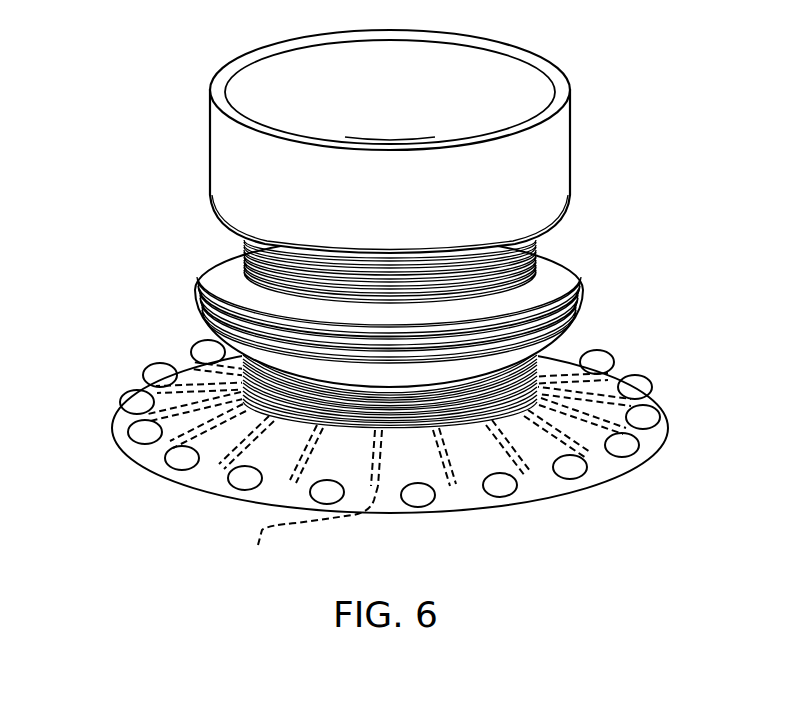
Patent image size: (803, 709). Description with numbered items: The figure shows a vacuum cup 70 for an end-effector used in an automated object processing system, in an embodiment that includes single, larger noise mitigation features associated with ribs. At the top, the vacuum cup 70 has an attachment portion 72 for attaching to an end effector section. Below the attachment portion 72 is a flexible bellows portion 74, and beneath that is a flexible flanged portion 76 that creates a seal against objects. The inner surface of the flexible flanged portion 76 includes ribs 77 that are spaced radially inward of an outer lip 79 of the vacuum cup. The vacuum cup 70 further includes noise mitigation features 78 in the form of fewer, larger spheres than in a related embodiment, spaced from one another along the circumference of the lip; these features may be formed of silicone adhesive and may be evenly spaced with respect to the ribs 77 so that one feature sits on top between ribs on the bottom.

The vacuum cup 70 is at (100, 80).
The attachment portion 72 is at (570, 92).
The flexible bellows portion 74 is at (583, 283).
The flexible flanged portion 76 is at (612, 383).
The ribs 77 is at (389, 469).
The noise mitigation features 78 is at (127, 437).
The outer lip 79 is at (615, 473).